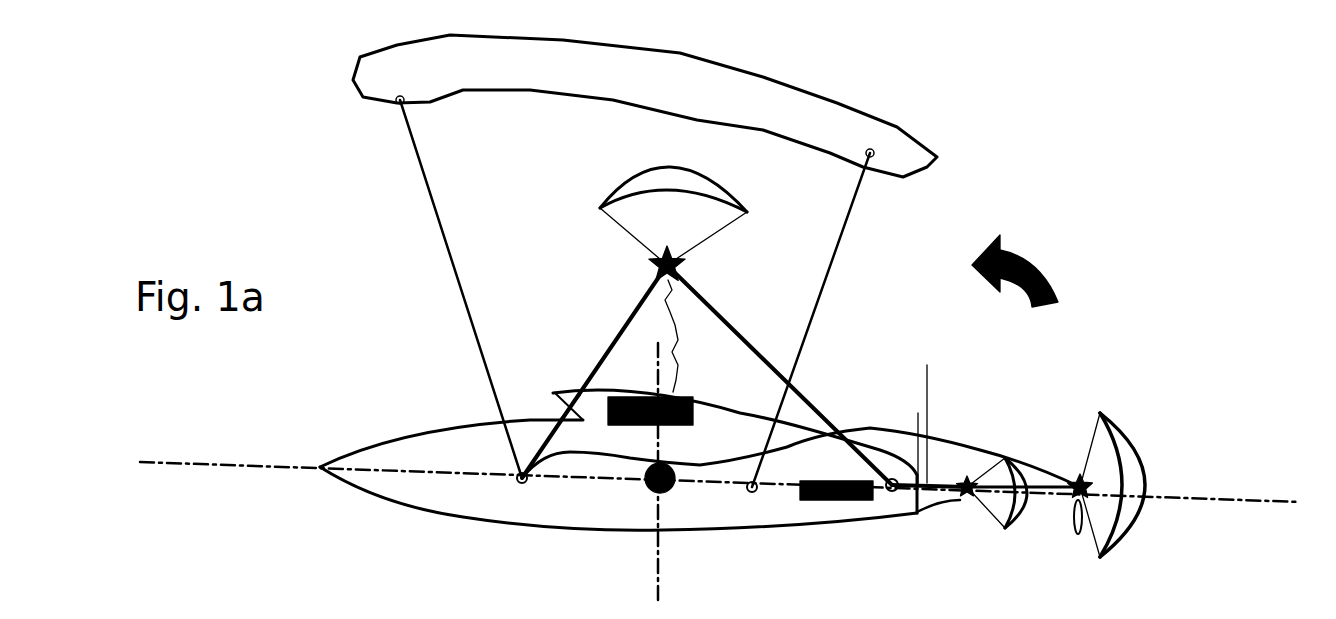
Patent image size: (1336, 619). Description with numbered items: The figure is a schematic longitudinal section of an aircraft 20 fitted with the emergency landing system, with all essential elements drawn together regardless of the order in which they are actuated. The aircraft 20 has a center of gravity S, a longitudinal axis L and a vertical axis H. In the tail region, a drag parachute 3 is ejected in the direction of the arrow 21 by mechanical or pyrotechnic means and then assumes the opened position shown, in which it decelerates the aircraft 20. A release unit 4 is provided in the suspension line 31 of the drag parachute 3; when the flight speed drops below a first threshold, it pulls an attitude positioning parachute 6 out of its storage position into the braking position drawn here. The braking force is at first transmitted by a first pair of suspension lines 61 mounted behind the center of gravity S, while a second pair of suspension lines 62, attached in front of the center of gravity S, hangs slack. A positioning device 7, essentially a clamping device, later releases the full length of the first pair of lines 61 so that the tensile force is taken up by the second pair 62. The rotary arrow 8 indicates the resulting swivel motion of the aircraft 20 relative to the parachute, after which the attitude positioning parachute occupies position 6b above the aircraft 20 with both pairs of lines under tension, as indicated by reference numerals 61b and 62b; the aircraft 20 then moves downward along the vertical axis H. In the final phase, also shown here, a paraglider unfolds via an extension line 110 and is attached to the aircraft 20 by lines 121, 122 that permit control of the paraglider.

The position of attitude positioning parachute above the aircraft 6b is at (630, 170).
The paraglider line 121 is at (430, 207).
The paraglider line 122 is at (840, 240).
The tensioned second pair of suspension lines 62b is at (628, 315).
The tensioned first pair of suspension lines 61b is at (710, 302).
The extension line 110 is at (677, 392).
The rotary arrow 8 is at (1020, 250).
The aircraft 20 is at (363, 493).
The longitudinal axis L is at (190, 465).
The vertical axis H is at (653, 550).
The center of gravity S is at (677, 487).
The suspension line 31 is at (937, 424).
The drag parachute 3 is at (1005, 458).
The release unit 4 is at (962, 500).
The first pair of suspension lines 61 is at (1035, 483).
The attitude positioning parachute 6 is at (1132, 447).
The positioning device 7 is at (1063, 505).
The second pair of suspension lines 62 is at (1072, 537).
The arrow 21 is at (964, 616).